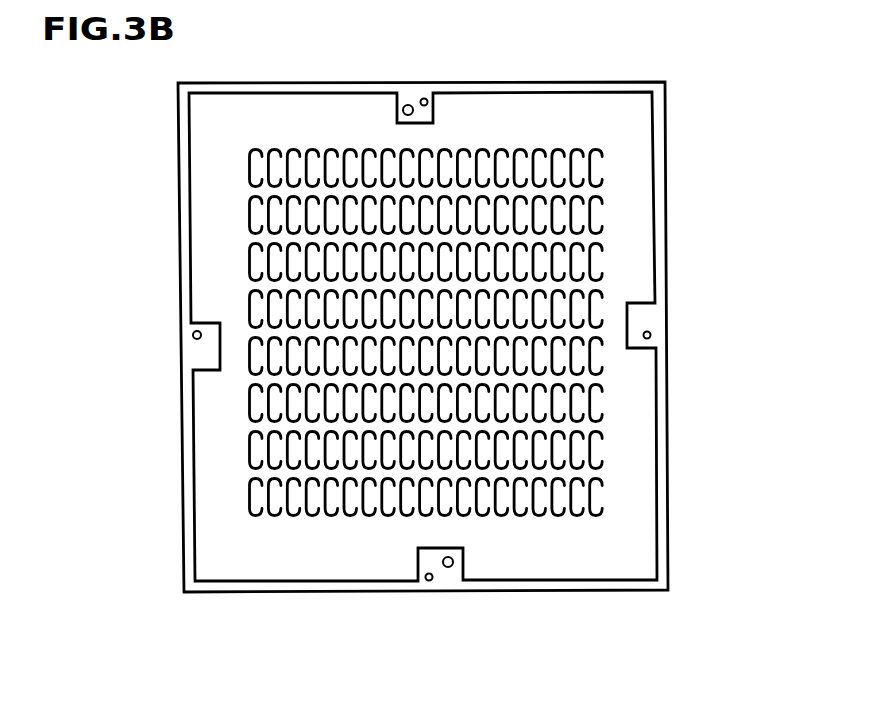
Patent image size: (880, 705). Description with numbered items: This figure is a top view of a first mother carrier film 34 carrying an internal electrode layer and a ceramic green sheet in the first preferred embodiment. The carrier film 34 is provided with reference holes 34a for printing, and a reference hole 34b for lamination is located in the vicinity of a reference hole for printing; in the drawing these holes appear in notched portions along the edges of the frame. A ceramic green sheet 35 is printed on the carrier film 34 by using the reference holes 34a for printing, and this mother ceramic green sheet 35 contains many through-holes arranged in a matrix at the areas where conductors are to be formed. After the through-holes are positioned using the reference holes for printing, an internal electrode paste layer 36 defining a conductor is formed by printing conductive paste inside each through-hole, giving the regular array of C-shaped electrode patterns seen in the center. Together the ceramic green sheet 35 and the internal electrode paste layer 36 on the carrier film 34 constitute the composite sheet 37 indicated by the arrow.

The first mother carrier film 34 is at (522, 81).
The reference holes for printing 34a is at (426, 98).
The reference hole for lamination 34b is at (407, 105).
The ceramic green sheet 35 is at (304, 112).
The internal electrode paste layer 36 is at (352, 146).
The composite sheet 37 is at (633, 77).